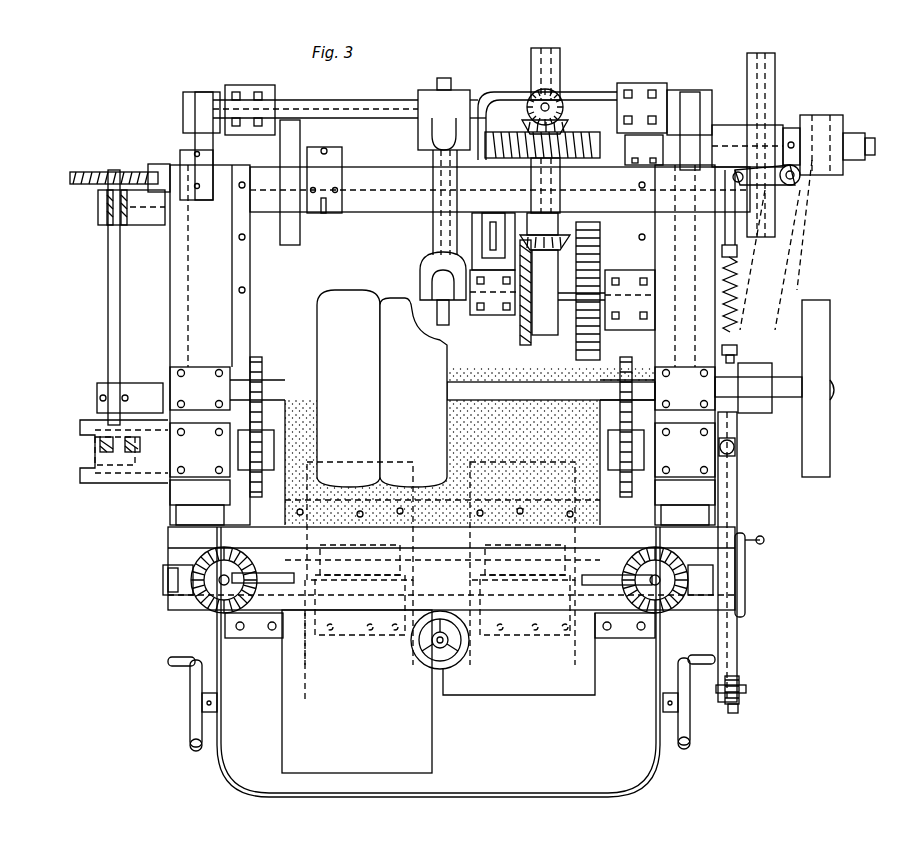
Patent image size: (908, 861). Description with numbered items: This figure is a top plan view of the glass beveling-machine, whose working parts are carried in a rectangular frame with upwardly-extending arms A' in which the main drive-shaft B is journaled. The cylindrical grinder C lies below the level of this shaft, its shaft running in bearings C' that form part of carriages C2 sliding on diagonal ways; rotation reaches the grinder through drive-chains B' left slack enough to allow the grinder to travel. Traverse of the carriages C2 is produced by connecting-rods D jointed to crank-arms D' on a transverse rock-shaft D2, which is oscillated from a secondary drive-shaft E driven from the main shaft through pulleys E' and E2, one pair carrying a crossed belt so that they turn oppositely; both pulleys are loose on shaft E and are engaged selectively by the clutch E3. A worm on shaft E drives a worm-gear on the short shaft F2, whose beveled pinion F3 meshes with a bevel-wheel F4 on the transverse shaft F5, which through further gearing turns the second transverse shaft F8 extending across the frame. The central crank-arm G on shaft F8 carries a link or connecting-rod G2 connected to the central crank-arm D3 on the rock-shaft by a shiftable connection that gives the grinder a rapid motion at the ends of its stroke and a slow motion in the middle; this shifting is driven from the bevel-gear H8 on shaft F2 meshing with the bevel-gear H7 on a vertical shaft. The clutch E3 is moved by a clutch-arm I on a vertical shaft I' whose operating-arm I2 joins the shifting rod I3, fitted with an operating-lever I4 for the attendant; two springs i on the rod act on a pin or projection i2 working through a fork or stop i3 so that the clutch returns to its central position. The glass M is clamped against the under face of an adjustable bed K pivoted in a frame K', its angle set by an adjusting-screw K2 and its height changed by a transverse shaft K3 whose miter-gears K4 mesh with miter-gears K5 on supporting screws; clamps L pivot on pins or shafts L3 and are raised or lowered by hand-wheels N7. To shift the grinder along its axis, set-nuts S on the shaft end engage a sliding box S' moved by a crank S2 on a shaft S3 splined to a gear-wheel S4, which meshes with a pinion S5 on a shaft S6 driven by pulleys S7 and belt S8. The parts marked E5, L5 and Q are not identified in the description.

The upwardly-extending arms A' is at (442, 345).
The main drive-shaft B is at (551, 390).
The drive-chains B' is at (442, 440).
The grinder C is at (442, 462).
The bearings C' is at (442, 450).
The carriage C2 is at (442, 502).
The connecting-rods D is at (430, 167).
The crank-arms D' is at (438, 132).
The transverse rock-shaft D2 is at (340, 93).
The central crank-arm D3 is at (432, 88).
The secondary drive-shaft E is at (860, 137).
The pulleys E' is at (761, 132).
The pulleys E2 is at (828, 115).
The clutch E3 is at (786, 128).
The clamp E5 is at (736, 445).
The short shaft F2 is at (560, 190).
The beveled pinion F3 is at (588, 222).
The bevel-wheel F4 is at (532, 325).
The transverse shaft F5 is at (565, 305).
The second transverse shaft F8 is at (315, 290).
The central crank-arm G is at (447, 325).
The link or connecting-rod G2 is at (428, 152).
The bevel-gear H7 is at (552, 118).
The bevel-gear H8 is at (560, 130).
The clutch-arm I is at (785, 184).
The vertical shaft I' is at (778, 260).
The operating-arm I2 is at (775, 195).
The shifting rod I3 is at (737, 495).
The operating-lever I4 is at (740, 686).
The springs i is at (740, 335).
The pin or projection i2 is at (738, 300).
The fork or stop i3 is at (738, 262).
The adjustable bed K is at (451, 588).
The frame K' is at (440, 563).
The adjusting-screw K2 is at (455, 662).
The transverse shaft K3 is at (282, 583).
The miter-gears K4 is at (192, 605).
The miter-gears K5 is at (664, 612).
The clamps L is at (582, 692).
The pins or shafts L3 is at (542, 292).
The block L5 is at (628, 292).
The glass M is at (357, 691).
The hand-wheels N7 is at (188, 725).
The frame Q is at (438, 666).
The set-nuts S is at (107, 451).
The sliding box S' is at (93, 478).
The crank S2 is at (130, 452).
The shaft S3 is at (108, 315).
The gear-wheel S4 is at (96, 196).
The pinion S5 is at (120, 157).
The shaft S6 is at (342, 160).
The pulleys S7 is at (300, 356).
The belt S8 is at (290, 193).